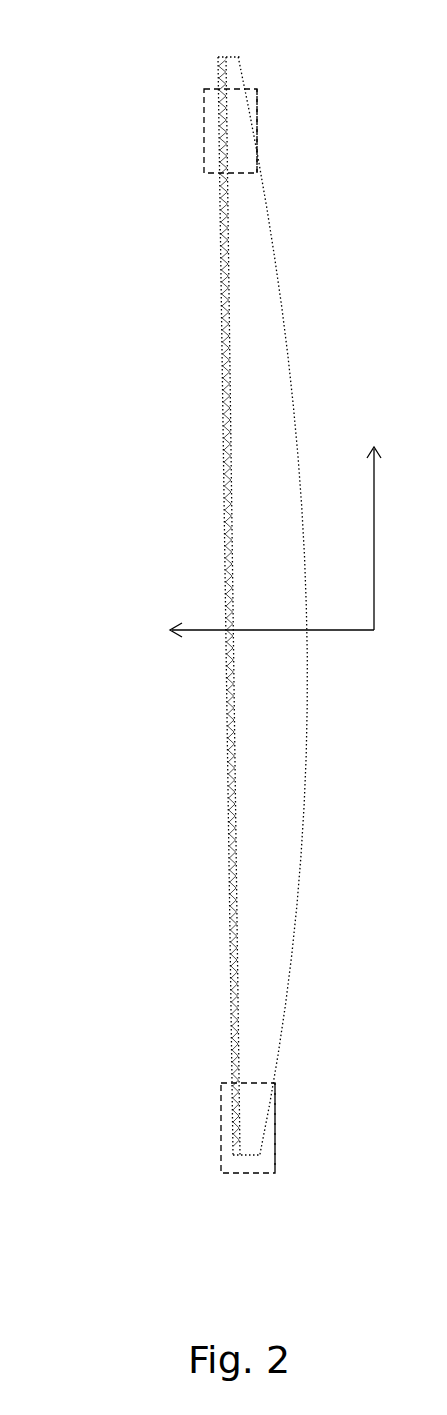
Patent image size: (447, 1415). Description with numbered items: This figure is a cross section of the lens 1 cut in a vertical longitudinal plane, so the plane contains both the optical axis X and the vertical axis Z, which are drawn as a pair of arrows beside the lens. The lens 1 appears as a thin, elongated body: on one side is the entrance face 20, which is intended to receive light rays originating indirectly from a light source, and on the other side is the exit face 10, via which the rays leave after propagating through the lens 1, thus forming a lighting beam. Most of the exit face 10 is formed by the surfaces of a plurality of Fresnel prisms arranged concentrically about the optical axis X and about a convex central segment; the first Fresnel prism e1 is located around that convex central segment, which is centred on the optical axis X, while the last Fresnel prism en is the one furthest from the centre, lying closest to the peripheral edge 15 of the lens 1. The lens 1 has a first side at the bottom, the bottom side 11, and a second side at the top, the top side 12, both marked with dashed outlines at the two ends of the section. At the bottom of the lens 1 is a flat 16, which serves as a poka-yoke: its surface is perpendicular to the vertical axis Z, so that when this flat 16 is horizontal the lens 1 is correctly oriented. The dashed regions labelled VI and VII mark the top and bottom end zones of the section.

The lens 1 is at (252, 860).
The exit face 10 is at (221, 398).
The bottom side 11 is at (209, 1158).
The top side 12 is at (204, 81).
The peripheral edge 15 is at (227, 53).
The flat 16 is at (247, 1155).
The entrance face 20 is at (286, 337).
The detail section VI is at (258, 120).
The detail section VII is at (277, 1132).
The last Fresnel prism en is at (220, 118).
The first Fresnel prism e1 is at (225, 649).
The optical axis X is at (254, 619).
The vertical axis Z is at (385, 529).